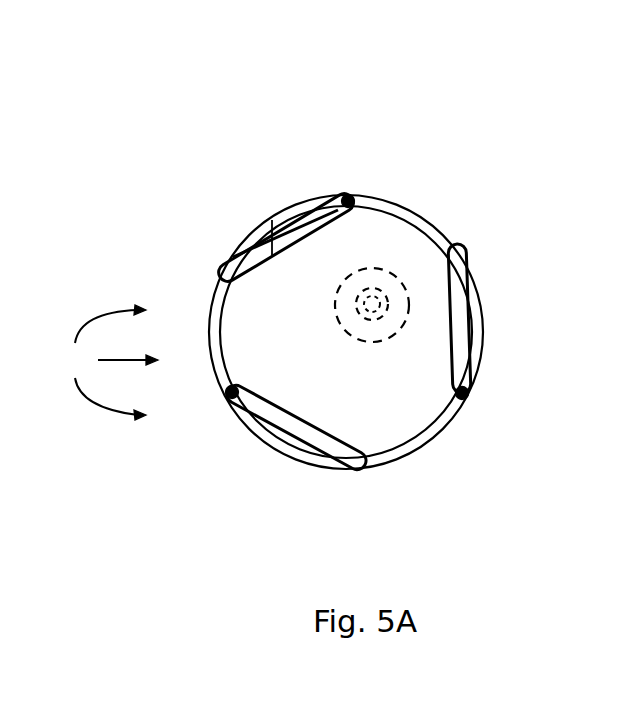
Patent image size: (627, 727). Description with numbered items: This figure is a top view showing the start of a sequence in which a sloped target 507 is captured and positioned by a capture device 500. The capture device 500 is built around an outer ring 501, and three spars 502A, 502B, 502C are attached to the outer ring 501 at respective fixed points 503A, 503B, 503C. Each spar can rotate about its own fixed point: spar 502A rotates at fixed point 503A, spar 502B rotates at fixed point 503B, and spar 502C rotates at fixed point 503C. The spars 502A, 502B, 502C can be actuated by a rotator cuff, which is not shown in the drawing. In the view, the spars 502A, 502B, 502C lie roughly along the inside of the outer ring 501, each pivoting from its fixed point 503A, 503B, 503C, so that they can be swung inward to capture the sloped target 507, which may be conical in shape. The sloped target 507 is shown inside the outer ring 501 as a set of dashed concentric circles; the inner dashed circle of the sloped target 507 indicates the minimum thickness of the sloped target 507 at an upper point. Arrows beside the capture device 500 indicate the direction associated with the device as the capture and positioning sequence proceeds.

The capture device 500 is at (109, 362).
The outer ring 501 is at (388, 460).
The spar 502A is at (307, 223).
The spar 502B is at (272, 407).
The spar 502C is at (458, 290).
The fixed point 503A is at (350, 198).
The fixed point 503B is at (225, 399).
The fixed point 503C is at (469, 397).
The sloped target 507 is at (382, 270).